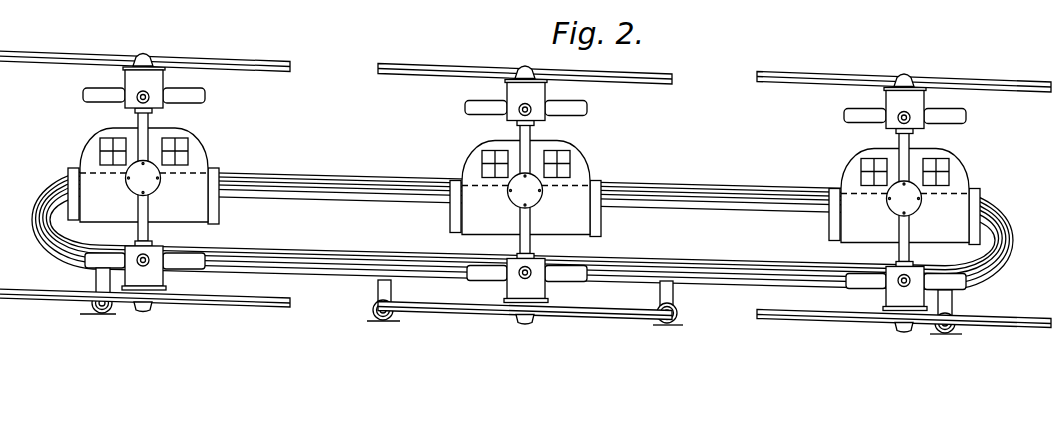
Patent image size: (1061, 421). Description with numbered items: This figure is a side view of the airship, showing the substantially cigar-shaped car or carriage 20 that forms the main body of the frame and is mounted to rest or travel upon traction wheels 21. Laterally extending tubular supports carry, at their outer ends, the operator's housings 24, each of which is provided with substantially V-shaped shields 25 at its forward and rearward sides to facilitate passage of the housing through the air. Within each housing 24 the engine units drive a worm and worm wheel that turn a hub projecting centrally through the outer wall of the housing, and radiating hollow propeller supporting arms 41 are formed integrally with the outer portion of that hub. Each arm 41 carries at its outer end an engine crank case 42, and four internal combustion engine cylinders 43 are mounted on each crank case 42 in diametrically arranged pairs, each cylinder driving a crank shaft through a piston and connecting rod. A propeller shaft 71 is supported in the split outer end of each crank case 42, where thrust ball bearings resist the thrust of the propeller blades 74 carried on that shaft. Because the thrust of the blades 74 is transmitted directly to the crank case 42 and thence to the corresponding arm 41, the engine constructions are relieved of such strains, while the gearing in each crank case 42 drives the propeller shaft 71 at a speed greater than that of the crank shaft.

The car or carriage 20 is at (522, 230).
The traction wheels 21 is at (102, 315).
The operator's housing 24 is at (196, 141).
The V-shaped shields 25 is at (72, 170).
The propeller supporting arms 41 is at (150, 122).
The engine crank case 42 is at (159, 96).
The internal combustion engine cylinders 43 is at (107, 95).
The propeller shaft 71 is at (143, 53).
The rotor blade 74 is at (40, 57).